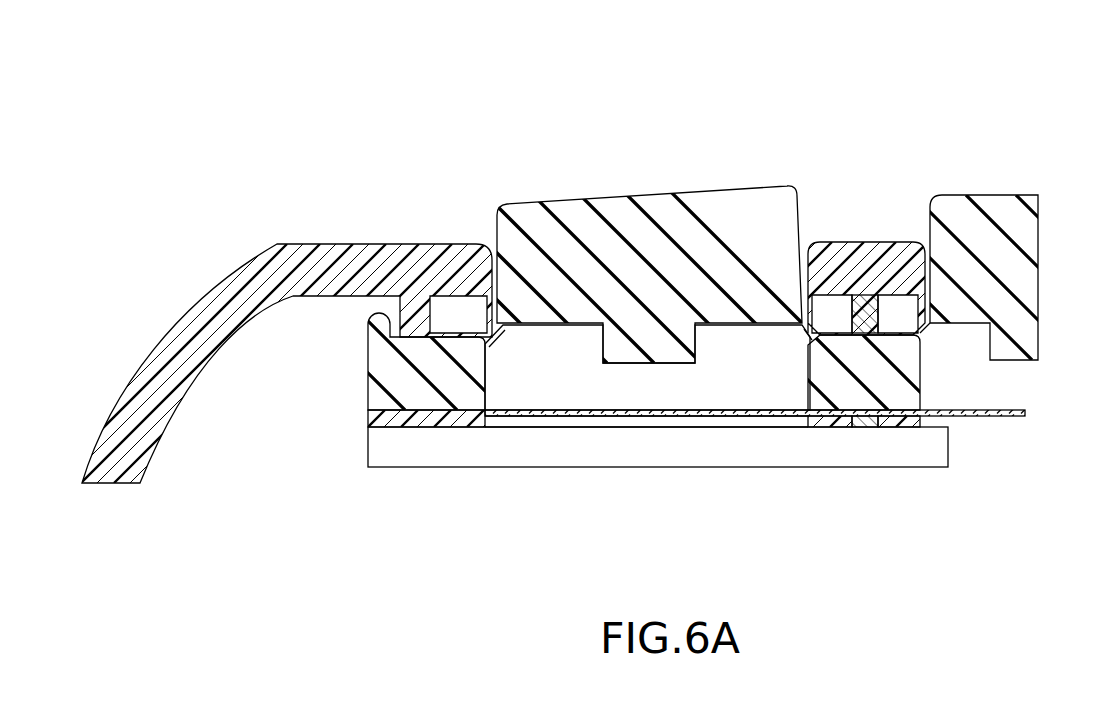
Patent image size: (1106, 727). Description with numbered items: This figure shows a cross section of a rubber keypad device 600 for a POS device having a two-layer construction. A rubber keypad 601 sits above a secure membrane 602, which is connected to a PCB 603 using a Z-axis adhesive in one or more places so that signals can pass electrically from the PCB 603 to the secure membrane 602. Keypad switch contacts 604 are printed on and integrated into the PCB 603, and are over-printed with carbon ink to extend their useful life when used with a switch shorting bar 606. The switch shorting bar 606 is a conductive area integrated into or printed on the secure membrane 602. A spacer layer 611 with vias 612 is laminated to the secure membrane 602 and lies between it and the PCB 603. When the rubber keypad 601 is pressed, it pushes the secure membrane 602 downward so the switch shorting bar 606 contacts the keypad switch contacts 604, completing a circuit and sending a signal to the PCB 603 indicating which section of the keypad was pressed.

The rubber keypad device 600 is at (453, 105).
The rubber keypad 601 is at (572, 207).
The secure membrane 602 is at (985, 417).
The PCB 603 is at (462, 467).
The keypad switch contacts 604 is at (637, 425).
The switch shorting bar 606 is at (697, 414).
The spacer layer 611 is at (890, 427).
The vias 612 is at (862, 427).